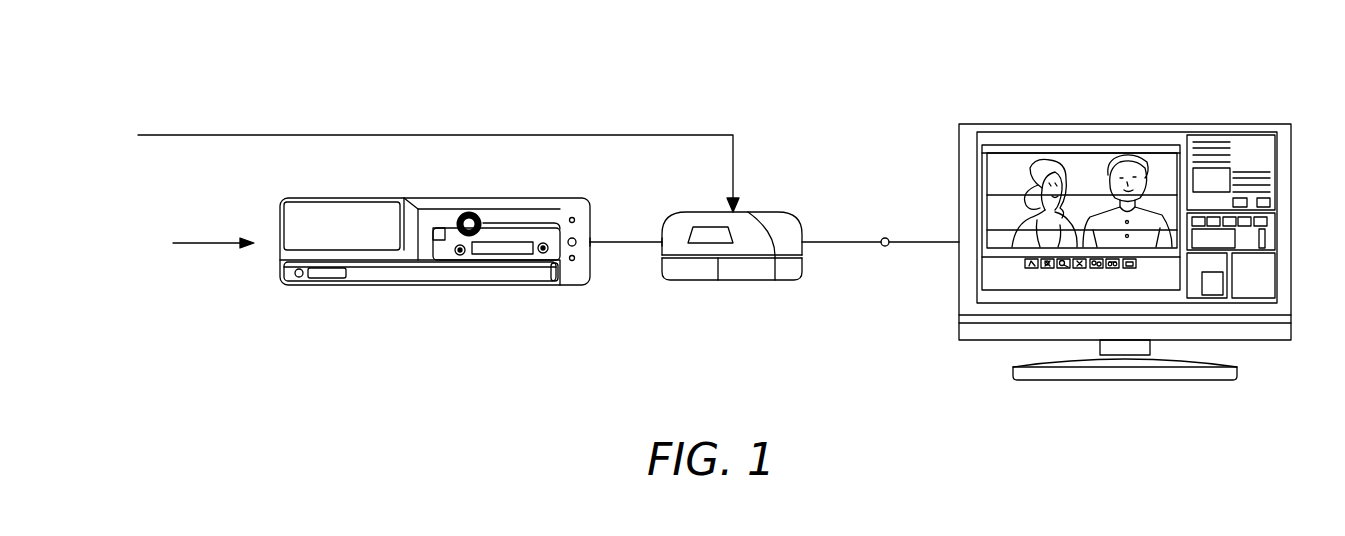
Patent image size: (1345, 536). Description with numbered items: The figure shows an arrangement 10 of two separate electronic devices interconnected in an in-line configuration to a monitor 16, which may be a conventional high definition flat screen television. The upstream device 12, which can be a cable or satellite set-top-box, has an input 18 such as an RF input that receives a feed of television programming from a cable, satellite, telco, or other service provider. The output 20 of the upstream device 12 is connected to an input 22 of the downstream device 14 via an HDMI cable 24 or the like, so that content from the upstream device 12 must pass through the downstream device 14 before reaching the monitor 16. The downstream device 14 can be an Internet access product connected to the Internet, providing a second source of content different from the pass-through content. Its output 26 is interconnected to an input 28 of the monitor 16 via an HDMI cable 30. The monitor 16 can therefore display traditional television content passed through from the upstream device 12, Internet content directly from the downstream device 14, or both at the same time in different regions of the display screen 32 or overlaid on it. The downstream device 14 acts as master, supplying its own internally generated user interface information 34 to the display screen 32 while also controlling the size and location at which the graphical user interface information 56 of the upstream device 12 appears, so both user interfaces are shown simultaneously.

The arrangement 10 is at (1254, 68).
The upstream device 12 is at (485, 257).
The downstream device 14 is at (734, 292).
The monitor 16 is at (1143, 244).
The input 18 is at (280, 243).
The output 20 is at (598, 247).
The input 22 is at (662, 246).
The HDMI cable 24 is at (630, 241).
The output 26 is at (803, 242).
The input 28 is at (959, 244).
The HDMI cable 30 is at (885, 238).
The display screen 32 is at (1146, 244).
The user interface information 34 is at (1258, 220).
The graphical user interface information 56 is at (1040, 266).